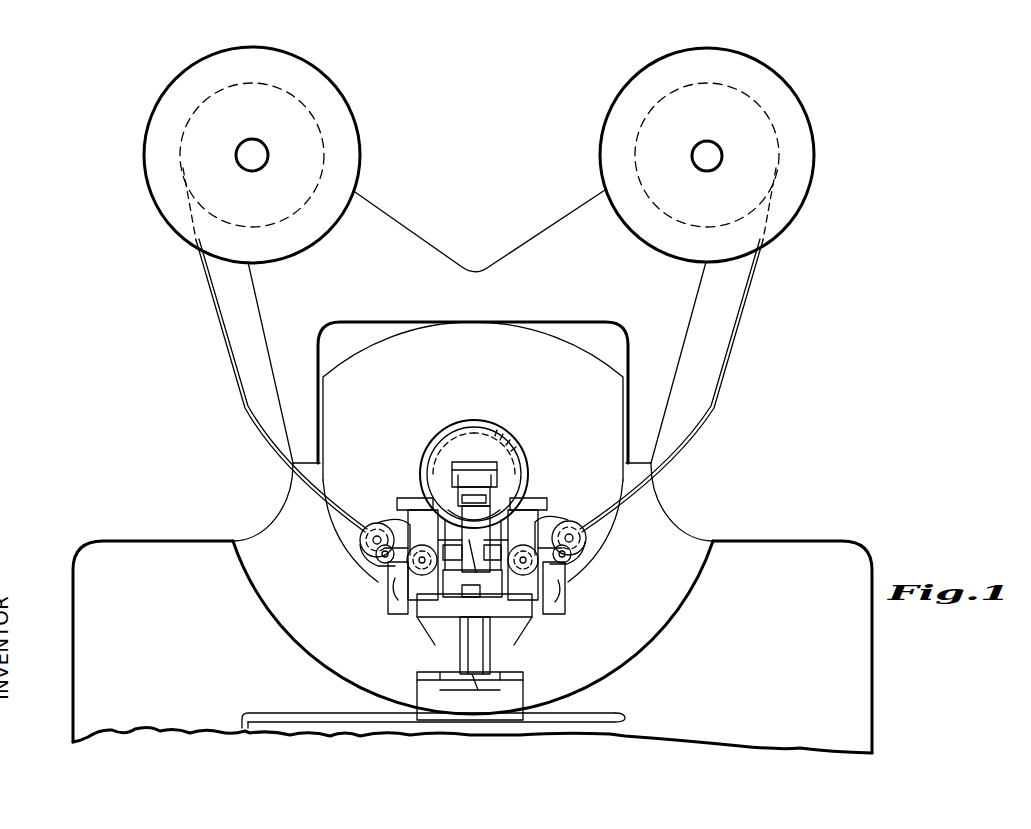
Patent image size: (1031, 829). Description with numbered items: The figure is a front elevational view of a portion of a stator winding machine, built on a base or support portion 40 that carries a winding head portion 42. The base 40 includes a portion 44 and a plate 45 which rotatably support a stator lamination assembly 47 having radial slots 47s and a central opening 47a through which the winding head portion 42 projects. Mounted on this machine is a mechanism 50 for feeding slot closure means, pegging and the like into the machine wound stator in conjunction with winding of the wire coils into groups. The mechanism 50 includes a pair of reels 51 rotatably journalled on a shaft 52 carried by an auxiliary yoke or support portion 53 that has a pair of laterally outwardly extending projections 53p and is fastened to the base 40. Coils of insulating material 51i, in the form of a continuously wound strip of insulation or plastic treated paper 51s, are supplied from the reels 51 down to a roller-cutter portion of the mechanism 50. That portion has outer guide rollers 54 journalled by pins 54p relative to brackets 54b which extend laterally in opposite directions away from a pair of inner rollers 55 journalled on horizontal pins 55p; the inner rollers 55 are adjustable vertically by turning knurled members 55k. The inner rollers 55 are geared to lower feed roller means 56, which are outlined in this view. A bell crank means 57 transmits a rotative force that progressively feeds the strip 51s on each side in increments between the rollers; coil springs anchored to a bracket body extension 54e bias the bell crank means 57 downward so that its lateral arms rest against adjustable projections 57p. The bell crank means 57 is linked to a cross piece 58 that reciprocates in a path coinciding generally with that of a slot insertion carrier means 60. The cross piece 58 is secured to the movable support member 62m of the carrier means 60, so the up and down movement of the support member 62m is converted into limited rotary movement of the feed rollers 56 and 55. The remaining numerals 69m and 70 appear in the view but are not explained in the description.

The base or support portion 40 is at (73, 639).
The winding head portion 42 is at (477, 466).
The portion 44 is at (368, 336).
The plate 45 is at (525, 338).
The stator lamination assembly 47 is at (499, 436).
The central opening or apertures 47a is at (463, 447).
The radial slots 47s is at (512, 452).
The mechanism 50 is at (522, 672).
The reels or storage means 51 is at (180, 84).
The coils of insulating material 51i is at (188, 123).
The strip of insulation 51s is at (212, 301).
The shaft 52 is at (253, 140).
The auxiliary yoke or support portion 53 is at (483, 272).
The laterally outwardly extending projections 53p is at (377, 206).
The outer guide rollers 54 is at (372, 540).
The shaft or pins 54p is at (372, 548).
The bracket or support means 54b is at (380, 568).
The bracket body extension 54e is at (437, 622).
The inner rollers 55 is at (407, 523).
The knurled members 55k is at (411, 512).
The shafts or pins 55p is at (403, 517).
The lower feed roller means 56 is at (422, 576).
The bell crank means 57 is at (368, 582).
The adjustable projections 57p is at (396, 602).
The cross piece 58 is at (492, 606).
The slot insertion carrier means 60 is at (524, 610).
The support member 62m is at (470, 696).
The mount bolt 69m is at (472, 677).
The column 70 is at (427, 450).